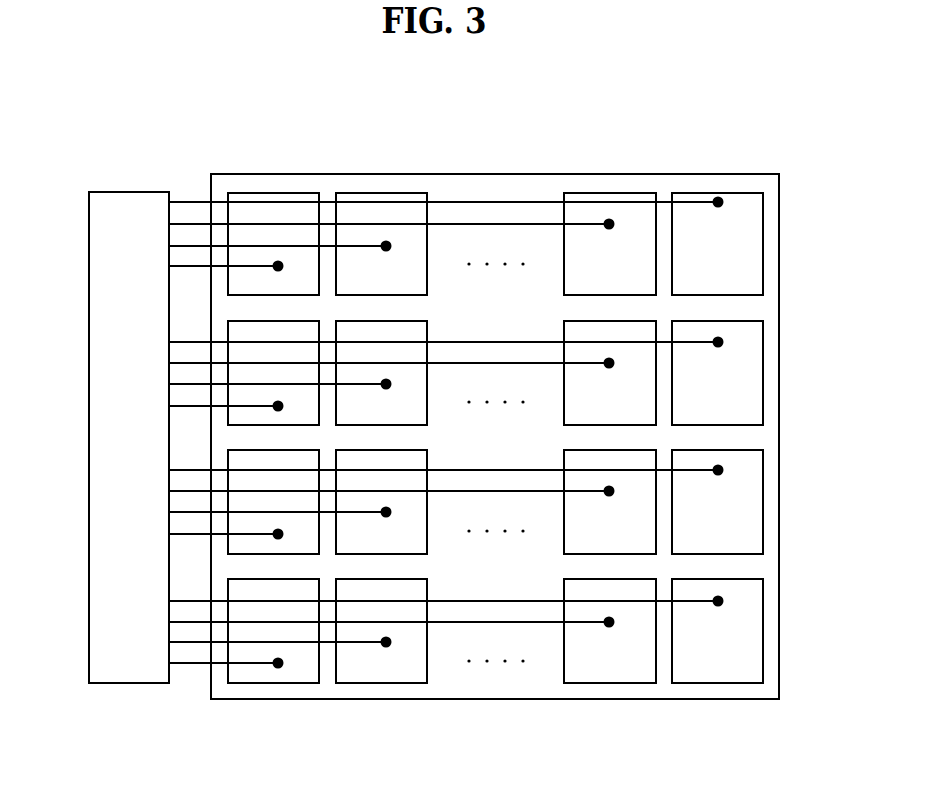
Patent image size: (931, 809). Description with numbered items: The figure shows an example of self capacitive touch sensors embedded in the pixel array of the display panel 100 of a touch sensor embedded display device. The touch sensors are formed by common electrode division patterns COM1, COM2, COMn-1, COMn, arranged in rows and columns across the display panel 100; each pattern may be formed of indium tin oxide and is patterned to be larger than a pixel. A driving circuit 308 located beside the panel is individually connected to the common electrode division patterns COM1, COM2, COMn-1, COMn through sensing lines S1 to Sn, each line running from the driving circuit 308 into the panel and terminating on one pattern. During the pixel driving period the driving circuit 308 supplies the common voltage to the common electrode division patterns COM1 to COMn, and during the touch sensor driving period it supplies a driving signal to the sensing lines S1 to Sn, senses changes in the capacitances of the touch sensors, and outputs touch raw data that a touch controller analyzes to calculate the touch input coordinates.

The display panel 100 is at (712, 173).
The driving circuit 308 is at (146, 443).
The sensing line S1 is at (197, 200).
The sensing line Sn is at (200, 665).
The common electrode division pattern COM1 is at (273, 438).
The common electrode division pattern COM2 is at (381, 438).
The common electrode division pattern COMn-1 is at (610, 438).
The common electrode division pattern COMn is at (717, 438).